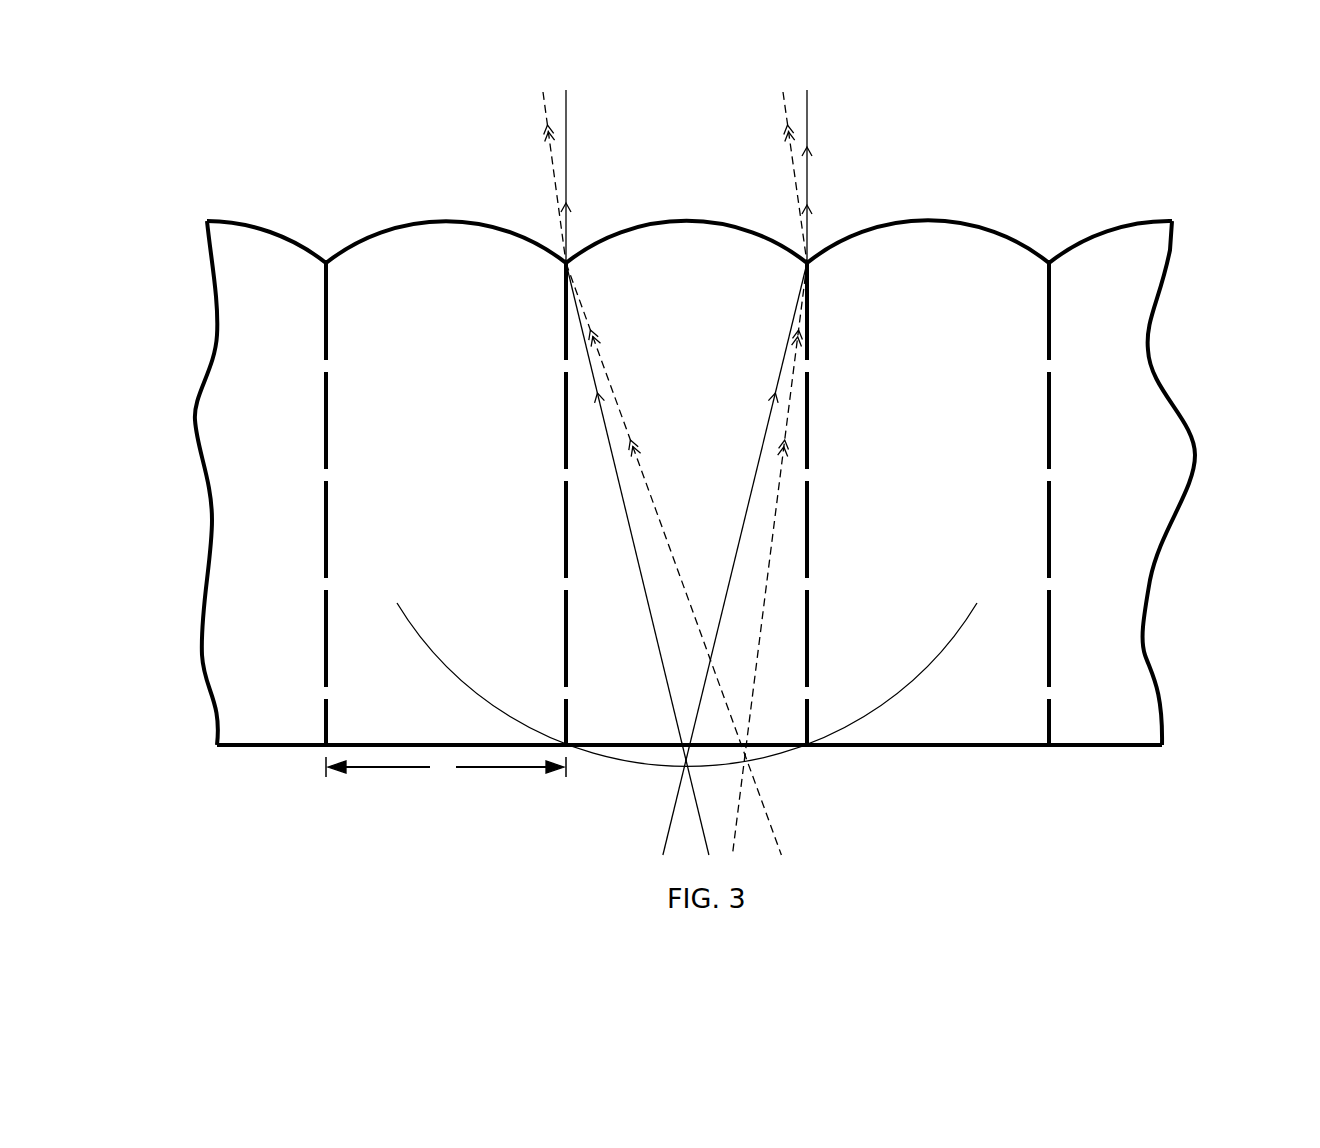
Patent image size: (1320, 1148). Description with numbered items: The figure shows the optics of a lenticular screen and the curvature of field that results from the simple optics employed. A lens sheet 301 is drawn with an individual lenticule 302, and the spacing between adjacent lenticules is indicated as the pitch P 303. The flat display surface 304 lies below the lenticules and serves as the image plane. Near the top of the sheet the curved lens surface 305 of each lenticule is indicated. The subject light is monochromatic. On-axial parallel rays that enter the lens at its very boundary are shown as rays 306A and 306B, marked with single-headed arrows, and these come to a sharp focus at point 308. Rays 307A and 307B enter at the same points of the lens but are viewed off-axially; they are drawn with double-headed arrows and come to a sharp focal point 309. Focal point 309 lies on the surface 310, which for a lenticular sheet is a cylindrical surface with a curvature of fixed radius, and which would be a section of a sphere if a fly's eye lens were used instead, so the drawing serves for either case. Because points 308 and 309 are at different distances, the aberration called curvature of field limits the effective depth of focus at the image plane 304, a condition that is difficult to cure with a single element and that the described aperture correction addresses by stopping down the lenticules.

The lens sheet 301 is at (1174, 568).
The individual lenticule 302 is at (990, 715).
The pitch P 303 is at (449, 792).
The display surface 304 is at (261, 767).
The lens surface 305 is at (947, 211).
The on-axial parallel ray 306A is at (578, 135).
The on-axial parallel ray 306B is at (820, 131).
The off-axial ray 307A is at (551, 174).
The off-axial ray 307B is at (785, 152).
The focus point 308 is at (672, 758).
The focal point 309 is at (761, 753).
The surface 310 is at (894, 694).